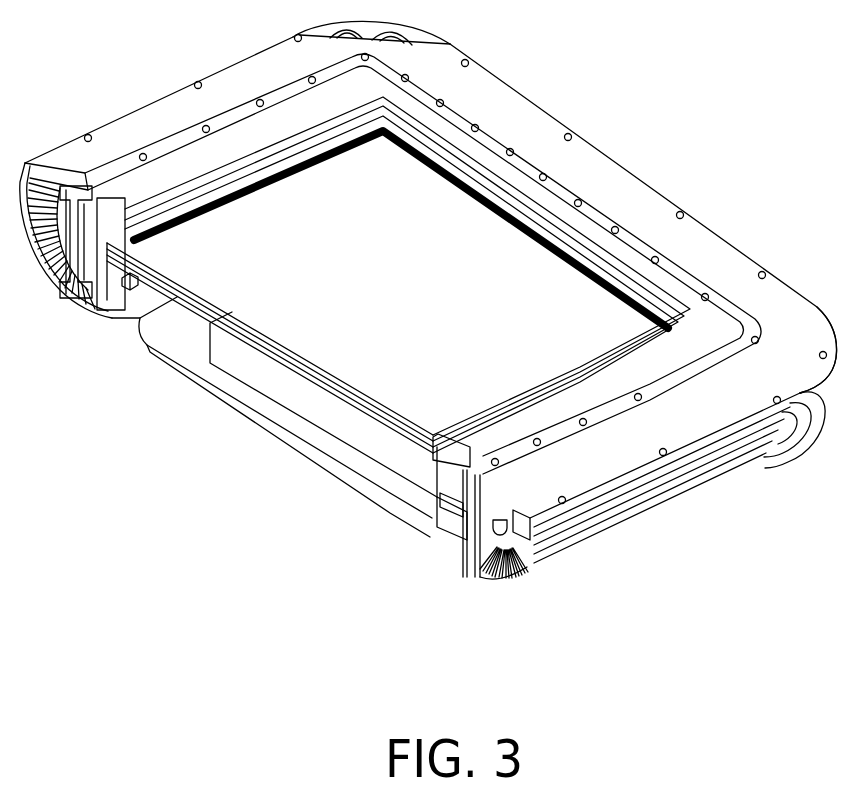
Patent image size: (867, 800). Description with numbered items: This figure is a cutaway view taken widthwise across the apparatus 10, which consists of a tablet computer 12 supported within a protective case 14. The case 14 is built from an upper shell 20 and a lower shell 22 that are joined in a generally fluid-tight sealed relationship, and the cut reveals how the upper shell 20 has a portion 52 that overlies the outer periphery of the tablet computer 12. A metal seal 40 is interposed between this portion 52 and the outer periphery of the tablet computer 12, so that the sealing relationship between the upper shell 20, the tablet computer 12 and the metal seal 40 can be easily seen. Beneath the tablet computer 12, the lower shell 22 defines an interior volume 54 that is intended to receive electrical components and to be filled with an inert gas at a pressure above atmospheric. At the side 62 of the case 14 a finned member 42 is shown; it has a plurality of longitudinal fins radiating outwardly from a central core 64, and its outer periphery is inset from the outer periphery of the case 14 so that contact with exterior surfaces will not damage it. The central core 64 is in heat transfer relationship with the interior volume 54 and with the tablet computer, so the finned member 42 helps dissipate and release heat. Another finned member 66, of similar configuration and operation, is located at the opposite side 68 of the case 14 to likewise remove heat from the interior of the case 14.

The apparatus 10 is at (622, 116).
The tablet computer 12 is at (401, 293).
The case 14 is at (840, 400).
The upper shell 20 is at (710, 247).
The lower shell 22 is at (77, 297).
The metal seal 40 is at (400, 473).
The finned member 42 is at (547, 560).
The portion 52 is at (425, 437).
The interior volume 54 is at (173, 342).
The side 62 is at (807, 433).
The central core 64 is at (490, 533).
The finned member 66 is at (43, 260).
The opposite side 68 is at (155, 97).